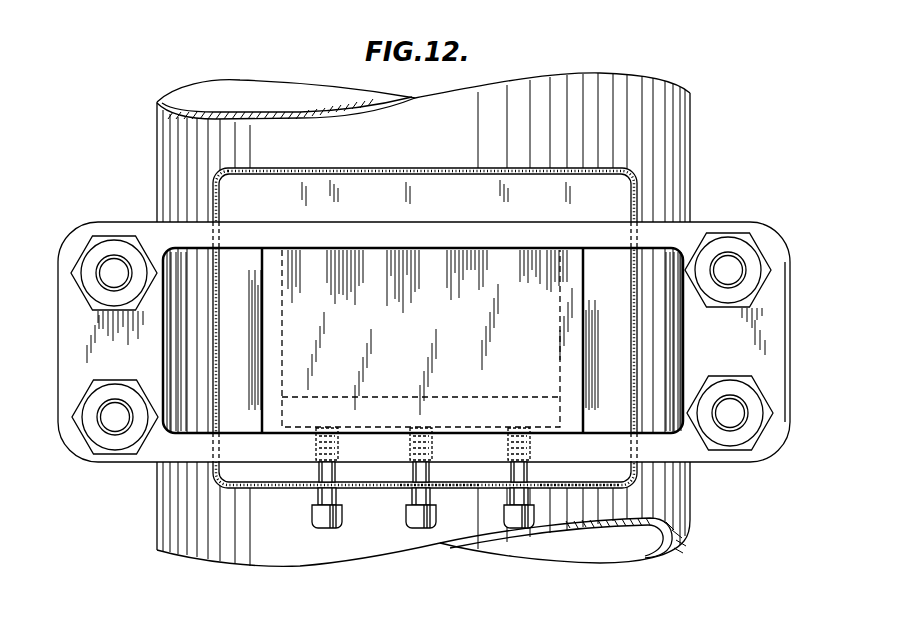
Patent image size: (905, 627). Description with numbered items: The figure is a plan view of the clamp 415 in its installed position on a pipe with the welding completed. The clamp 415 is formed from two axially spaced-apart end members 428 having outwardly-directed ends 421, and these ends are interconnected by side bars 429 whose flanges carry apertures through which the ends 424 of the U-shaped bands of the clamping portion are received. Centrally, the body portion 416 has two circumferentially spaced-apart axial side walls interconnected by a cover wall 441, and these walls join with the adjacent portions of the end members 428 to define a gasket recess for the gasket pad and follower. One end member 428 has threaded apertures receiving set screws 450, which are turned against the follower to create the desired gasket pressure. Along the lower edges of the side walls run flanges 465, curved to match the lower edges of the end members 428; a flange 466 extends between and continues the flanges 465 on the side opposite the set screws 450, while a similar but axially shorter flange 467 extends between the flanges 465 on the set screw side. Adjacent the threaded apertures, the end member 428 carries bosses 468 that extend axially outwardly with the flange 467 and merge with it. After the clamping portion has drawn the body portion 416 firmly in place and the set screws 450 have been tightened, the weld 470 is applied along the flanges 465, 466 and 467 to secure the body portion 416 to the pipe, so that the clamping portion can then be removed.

The clamp 415 is at (425, 361).
The body portion 416 is at (692, 188).
The outwardly-directed ends 421 is at (167, 238).
The ends of the U-shaped bands 424 is at (110, 423).
The end members 428 is at (457, 233).
The side bars 429 is at (65, 302).
The cover wall 441 is at (502, 304).
The set screws 450 is at (340, 500).
The flanges 465 is at (233, 275).
The flange 466 is at (484, 357).
The flange 467 is at (602, 468).
The bosses 468 is at (445, 483).
The weld 470 is at (400, 175).